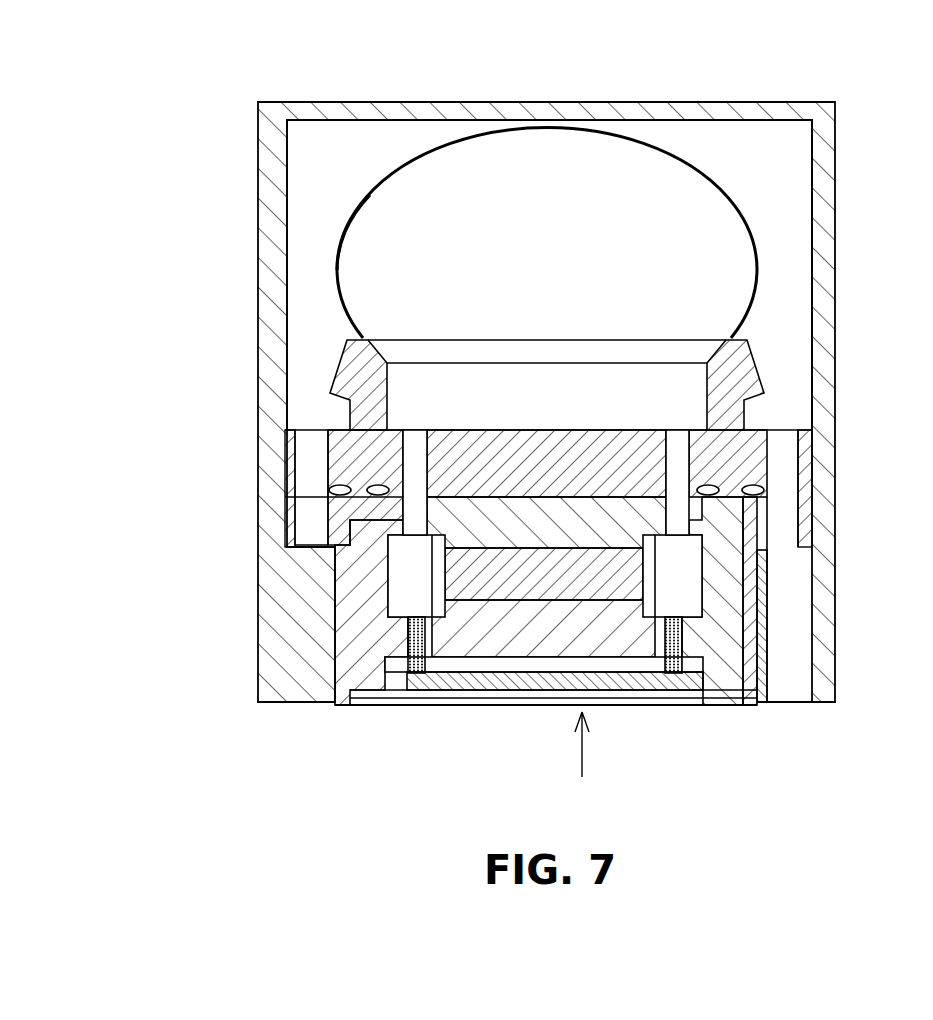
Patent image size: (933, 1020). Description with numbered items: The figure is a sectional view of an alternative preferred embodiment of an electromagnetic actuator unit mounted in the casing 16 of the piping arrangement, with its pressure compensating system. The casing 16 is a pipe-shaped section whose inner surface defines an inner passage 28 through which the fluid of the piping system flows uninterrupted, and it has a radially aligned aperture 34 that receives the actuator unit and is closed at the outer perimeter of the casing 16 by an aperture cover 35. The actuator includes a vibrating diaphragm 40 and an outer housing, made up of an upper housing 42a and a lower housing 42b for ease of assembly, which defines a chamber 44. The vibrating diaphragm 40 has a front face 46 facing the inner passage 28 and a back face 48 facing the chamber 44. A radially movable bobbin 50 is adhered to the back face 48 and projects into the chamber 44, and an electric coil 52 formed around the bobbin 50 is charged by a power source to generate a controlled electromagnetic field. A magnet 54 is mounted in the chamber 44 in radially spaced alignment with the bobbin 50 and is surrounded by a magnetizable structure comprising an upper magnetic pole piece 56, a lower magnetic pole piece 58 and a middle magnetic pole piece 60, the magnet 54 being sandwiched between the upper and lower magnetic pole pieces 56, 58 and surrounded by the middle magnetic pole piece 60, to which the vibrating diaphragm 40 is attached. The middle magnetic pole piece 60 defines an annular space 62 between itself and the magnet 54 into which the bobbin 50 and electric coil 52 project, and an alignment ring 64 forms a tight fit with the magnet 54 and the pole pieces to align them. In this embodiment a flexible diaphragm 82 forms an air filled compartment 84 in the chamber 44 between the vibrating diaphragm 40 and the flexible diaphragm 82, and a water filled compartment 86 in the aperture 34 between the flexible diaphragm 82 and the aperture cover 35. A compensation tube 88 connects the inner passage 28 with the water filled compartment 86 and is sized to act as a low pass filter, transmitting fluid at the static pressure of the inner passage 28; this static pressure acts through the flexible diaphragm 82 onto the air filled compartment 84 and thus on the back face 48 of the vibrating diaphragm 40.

The casing 16 is at (833, 613).
The inner passage 28 is at (497, 746).
The aperture 34 is at (322, 168).
The aperture cover 35 is at (703, 112).
The vibrating diaphragm 40 is at (582, 761).
The upper housing 42a is at (758, 580).
The lower housing 42b is at (365, 453).
The chamber 44 is at (532, 263).
The front face 46 is at (655, 695).
The back face 48 is at (760, 682).
The bobbin 50 is at (405, 678).
The electric coil 52 is at (412, 625).
The magnet 54 is at (563, 577).
The upper magnetic pole piece 56 is at (467, 643).
The lower magnetic pole piece 58 is at (345, 492).
The middle magnetic pole piece 60 is at (355, 565).
The annular space 62 is at (400, 583).
The alignment ring 64 is at (692, 545).
The flexible diaphragm 82 is at (335, 277).
The air filled compartment 84 is at (390, 230).
The water filled compartment 86 is at (783, 225).
The compensation tube 88 is at (782, 692).